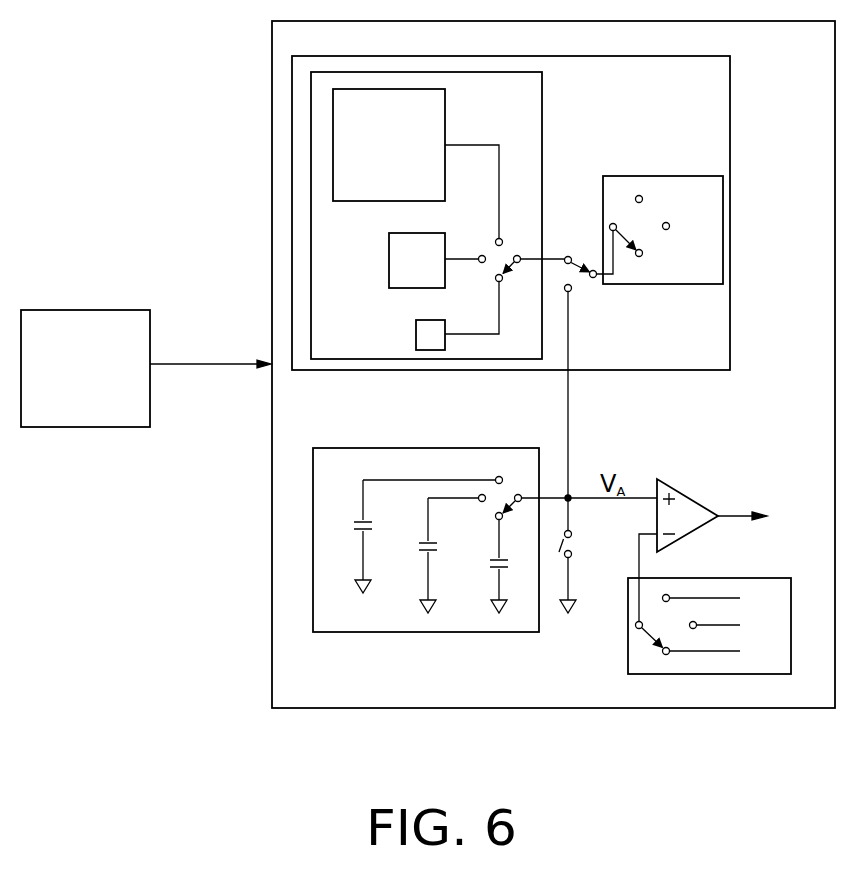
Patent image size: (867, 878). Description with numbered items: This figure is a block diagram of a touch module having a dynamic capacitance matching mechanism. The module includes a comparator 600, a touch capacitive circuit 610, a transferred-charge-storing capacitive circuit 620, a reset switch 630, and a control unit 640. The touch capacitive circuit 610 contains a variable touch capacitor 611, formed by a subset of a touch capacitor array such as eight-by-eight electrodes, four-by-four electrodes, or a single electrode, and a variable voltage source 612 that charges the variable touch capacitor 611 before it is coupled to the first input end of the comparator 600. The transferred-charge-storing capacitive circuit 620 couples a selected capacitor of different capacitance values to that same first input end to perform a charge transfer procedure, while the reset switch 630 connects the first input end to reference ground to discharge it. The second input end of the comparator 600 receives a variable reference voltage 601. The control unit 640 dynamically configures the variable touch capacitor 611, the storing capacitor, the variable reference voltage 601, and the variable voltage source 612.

The comparator 600 is at (693, 498).
The variable reference voltage 601 is at (768, 578).
The touch capacitive circuit 610 is at (730, 158).
The variable touch capacitor 611 is at (543, 132).
The variable voltage source 612 is at (663, 175).
The transferred-charge-storing capacitive circuit 620 is at (428, 448).
The reset switch 630 is at (573, 538).
The control unit 640 is at (95, 310).